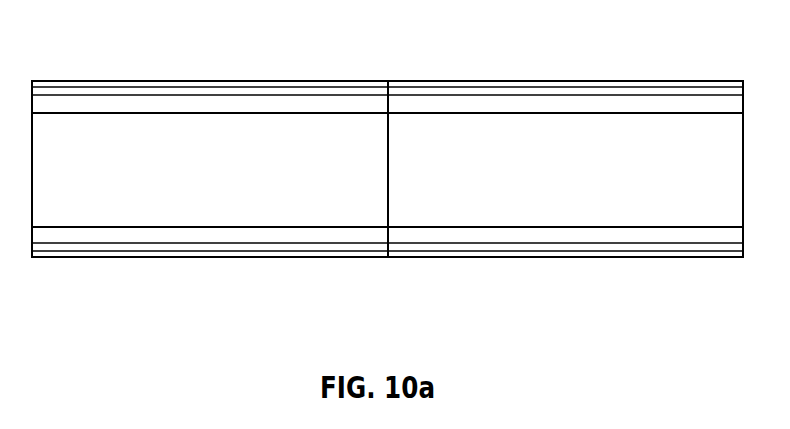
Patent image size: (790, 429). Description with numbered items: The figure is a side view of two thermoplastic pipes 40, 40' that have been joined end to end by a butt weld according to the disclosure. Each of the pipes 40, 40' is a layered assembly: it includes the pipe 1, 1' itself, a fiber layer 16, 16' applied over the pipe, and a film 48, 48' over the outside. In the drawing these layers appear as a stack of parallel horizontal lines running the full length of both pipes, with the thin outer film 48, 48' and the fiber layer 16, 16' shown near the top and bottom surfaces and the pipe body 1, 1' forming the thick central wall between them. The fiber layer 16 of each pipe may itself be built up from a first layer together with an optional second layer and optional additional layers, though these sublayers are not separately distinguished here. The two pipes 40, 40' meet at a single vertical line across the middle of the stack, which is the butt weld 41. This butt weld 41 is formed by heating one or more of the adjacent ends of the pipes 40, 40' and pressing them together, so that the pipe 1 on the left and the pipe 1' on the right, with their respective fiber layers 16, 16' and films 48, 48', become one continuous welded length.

The fiber layer 16 is at (210, 56).
The film 48 is at (210, 54).
The pipe 1 is at (210, 144).
The butt weld 41 is at (388, 81).
The fiber layer 16' is at (565, 57).
The film 48' is at (565, 54).
The pipe 1' is at (565, 142).
The pipe 40 is at (210, 303).
The pipe 40' is at (565, 303).